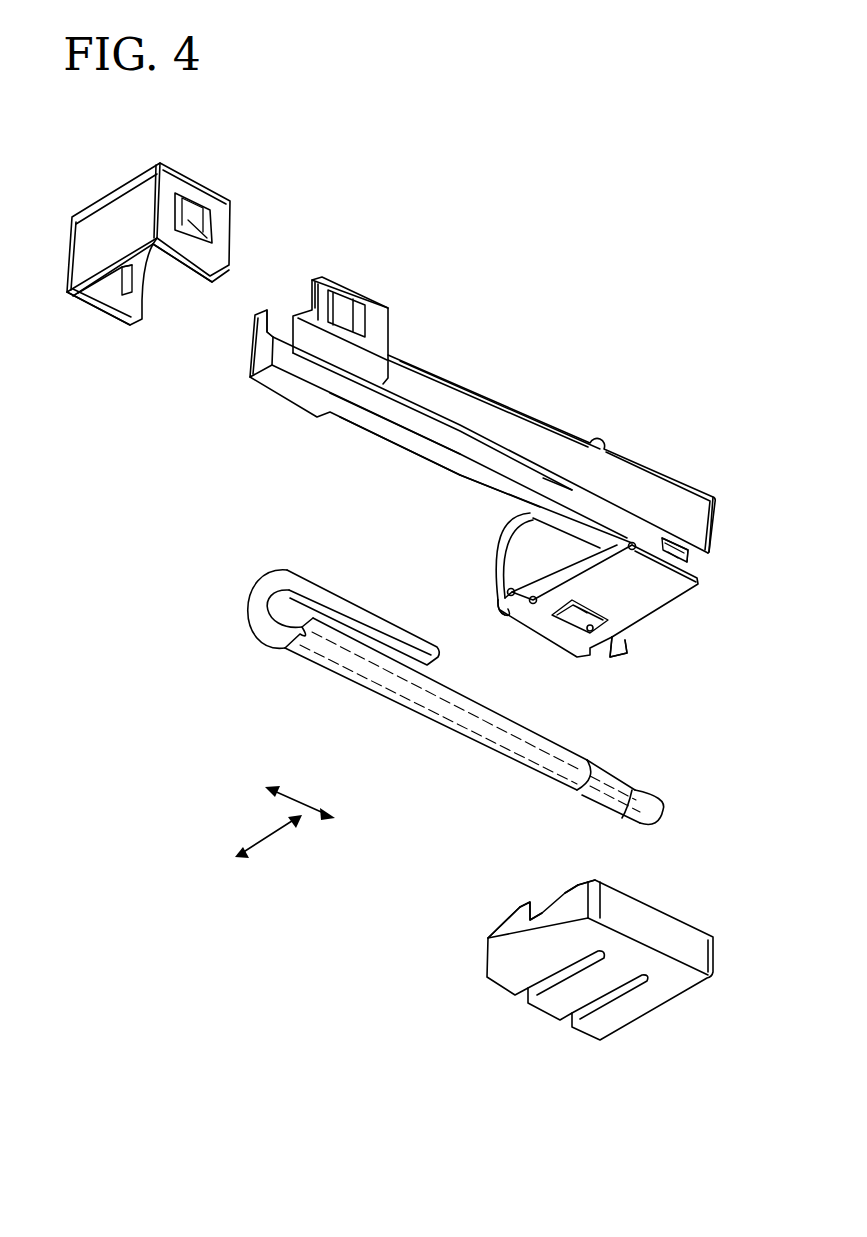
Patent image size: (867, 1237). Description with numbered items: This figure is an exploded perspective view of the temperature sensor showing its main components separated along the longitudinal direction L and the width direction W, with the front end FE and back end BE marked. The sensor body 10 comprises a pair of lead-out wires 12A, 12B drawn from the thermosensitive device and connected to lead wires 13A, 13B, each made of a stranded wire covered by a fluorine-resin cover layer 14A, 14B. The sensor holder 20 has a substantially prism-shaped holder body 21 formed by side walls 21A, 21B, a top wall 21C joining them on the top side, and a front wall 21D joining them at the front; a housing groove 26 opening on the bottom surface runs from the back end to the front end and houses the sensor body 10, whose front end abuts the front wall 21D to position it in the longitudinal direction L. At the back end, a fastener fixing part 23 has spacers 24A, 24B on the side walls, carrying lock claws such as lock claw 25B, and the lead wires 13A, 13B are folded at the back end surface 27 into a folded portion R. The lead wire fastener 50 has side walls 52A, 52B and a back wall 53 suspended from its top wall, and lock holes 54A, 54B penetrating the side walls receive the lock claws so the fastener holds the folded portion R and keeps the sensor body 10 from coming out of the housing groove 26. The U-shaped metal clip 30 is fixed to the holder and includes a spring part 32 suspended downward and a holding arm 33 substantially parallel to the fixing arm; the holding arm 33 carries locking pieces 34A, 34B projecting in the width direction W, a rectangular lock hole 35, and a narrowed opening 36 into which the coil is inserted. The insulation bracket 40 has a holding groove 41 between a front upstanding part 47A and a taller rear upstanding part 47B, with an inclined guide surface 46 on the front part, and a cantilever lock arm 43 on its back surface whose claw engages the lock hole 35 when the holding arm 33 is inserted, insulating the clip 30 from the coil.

The sensor body 10 is at (418, 693).
The lead-out wire 12A is at (581, 748).
The lead-out wire 12B is at (558, 791).
The lead wire 13A is at (357, 596).
The lead wire 13B is at (391, 633).
The cover layer 14A is at (267, 618).
The cover layer 14B is at (253, 599).
The sensor holder 20 is at (500, 392).
The holder body 21 is at (420, 458).
The side wall 21A is at (450, 474).
The side wall 21B is at (478, 405).
The top wall 21C is at (420, 360).
The front wall 21D is at (716, 524).
The fastener fixing part 23 is at (325, 288).
The spacer 24A is at (265, 310).
The spacer 24B is at (325, 256).
The lock claw 25B is at (360, 312).
The housing groove 26 is at (379, 412).
The back end surface 27 is at (268, 334).
The clip 30 is at (596, 601).
The spring part 32 is at (510, 533).
The holding arm 33 is at (665, 610).
The locking piece 34A is at (633, 656).
The locking piece 34B is at (490, 601).
The lock hole 35 is at (576, 634).
The opening 36 is at (690, 566).
The insulation bracket 40 is at (588, 951).
The holding groove 41 is at (546, 904).
The lock arm 43 is at (544, 1020).
The guide surface 46 is at (603, 880).
The front upstanding part 47A is at (578, 878).
The rear upstanding part 47B is at (520, 908).
The lead wire fastener 50 is at (128, 250).
The side wall 52A is at (100, 316).
The side wall 52B is at (180, 270).
The back wall 53 is at (85, 236).
The lock hole 54A is at (130, 322).
The lock hole 54B is at (190, 198).
The back end BE is at (190, 347).
The front end FE is at (732, 564).
The folded portion R is at (257, 566).
The longitudinal direction L is at (306, 803).
The width direction W is at (267, 840).